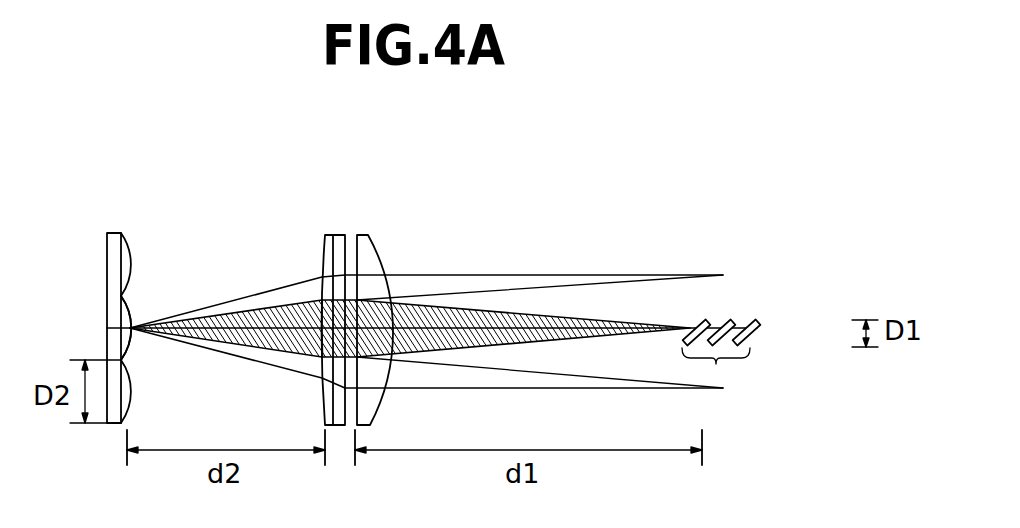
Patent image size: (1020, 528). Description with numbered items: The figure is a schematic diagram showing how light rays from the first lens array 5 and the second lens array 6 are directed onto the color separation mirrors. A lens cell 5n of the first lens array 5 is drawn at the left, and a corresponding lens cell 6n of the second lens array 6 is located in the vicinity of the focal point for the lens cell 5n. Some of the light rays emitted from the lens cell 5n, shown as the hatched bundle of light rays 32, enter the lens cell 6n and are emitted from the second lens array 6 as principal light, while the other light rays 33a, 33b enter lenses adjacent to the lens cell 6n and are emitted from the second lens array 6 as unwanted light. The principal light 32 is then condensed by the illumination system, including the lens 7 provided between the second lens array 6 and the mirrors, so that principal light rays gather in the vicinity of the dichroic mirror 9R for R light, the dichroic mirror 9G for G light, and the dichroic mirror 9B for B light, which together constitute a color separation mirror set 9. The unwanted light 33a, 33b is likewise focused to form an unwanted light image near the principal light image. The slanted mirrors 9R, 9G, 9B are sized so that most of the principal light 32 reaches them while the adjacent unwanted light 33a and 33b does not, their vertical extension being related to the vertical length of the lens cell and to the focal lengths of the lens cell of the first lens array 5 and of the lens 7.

The first lens array 5 is at (114, 232).
The lens cell 5n is at (128, 302).
The second lens array 6 is at (340, 234).
The lens cell 6n is at (318, 354).
The first collimator lens 7 is at (378, 241).
The color separation mirror set 9 is at (761, 337).
The dichroic mirror for R light 9R is at (707, 321).
The dichroic mirror for G light 9G is at (729, 322).
The dichroic mirror for B light 9B is at (759, 320).
The principal light 32 is at (186, 343).
The unwanted light 33a is at (261, 299).
The unwanted light 33b is at (243, 356).